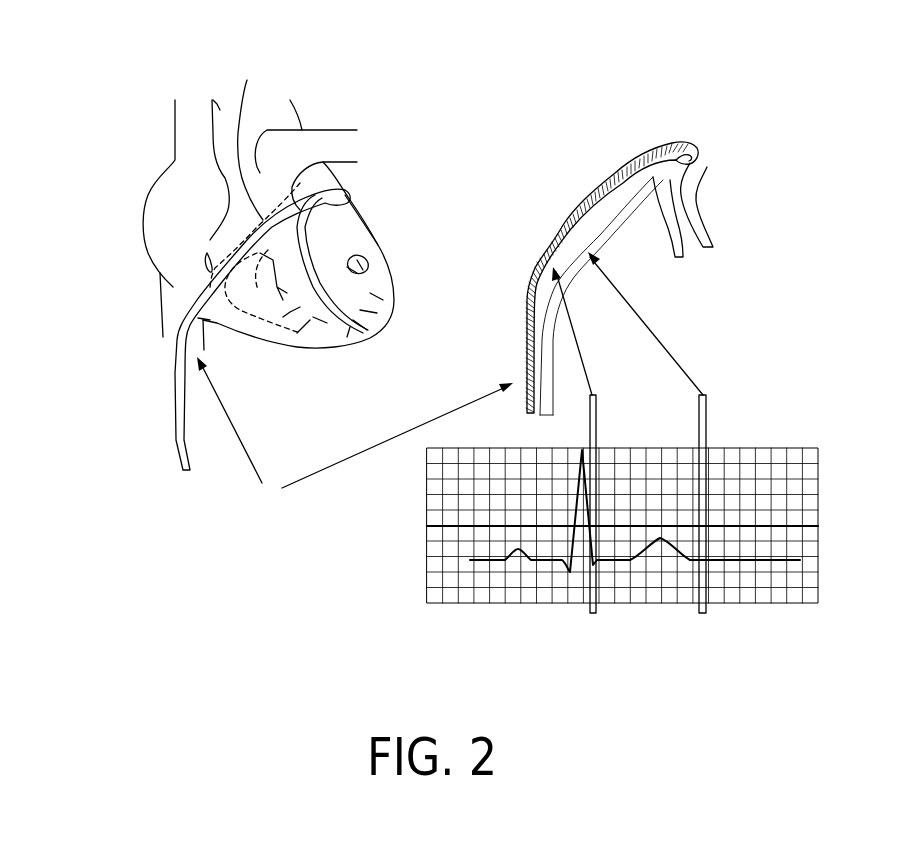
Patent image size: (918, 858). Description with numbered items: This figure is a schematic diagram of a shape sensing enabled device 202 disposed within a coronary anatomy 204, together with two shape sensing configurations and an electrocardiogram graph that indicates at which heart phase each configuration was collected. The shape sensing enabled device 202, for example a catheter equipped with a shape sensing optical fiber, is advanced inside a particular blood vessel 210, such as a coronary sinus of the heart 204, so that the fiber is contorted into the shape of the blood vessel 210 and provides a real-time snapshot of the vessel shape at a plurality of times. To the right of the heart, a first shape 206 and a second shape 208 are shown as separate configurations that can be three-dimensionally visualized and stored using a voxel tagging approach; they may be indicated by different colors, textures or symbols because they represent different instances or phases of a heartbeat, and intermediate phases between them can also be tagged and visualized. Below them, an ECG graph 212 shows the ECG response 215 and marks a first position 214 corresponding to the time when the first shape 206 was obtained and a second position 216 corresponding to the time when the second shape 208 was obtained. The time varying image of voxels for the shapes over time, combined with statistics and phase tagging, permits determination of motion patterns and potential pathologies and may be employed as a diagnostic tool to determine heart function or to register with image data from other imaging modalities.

The shape sensing enabled device 202 is at (182, 432).
The coronary anatomy 204 is at (138, 264).
The first shape 206 is at (592, 207).
The second shape 208 is at (692, 214).
The blood vessel 210 is at (250, 133).
The ECG graph 212 is at (410, 535).
The first position 214 is at (593, 613).
The ECG response 215 is at (540, 560).
The second position 216 is at (703, 613).